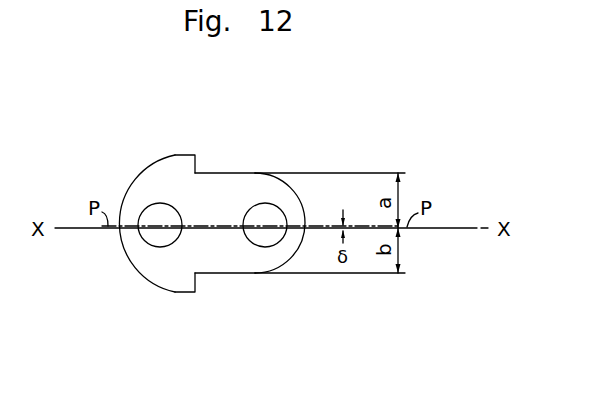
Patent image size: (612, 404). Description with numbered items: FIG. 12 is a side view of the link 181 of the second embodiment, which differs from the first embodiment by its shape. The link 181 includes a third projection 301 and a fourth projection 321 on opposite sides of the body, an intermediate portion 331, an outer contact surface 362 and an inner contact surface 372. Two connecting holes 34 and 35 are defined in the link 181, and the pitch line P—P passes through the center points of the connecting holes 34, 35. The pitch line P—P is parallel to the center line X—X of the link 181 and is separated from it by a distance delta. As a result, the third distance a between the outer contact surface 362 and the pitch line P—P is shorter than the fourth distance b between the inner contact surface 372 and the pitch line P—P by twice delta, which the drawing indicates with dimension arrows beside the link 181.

The third projection 301 is at (177, 158).
The outer contact surface 362 is at (217, 172).
The inner contact surface 372 is at (252, 273).
The intermediate portion 331 is at (232, 267).
The fourth projection 321 is at (180, 287).
The link 181 is at (181, 257).
The connecting hole 34 is at (143, 208).
The connecting hole 35 is at (258, 204).